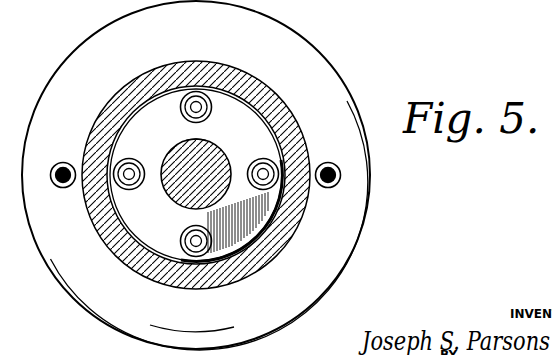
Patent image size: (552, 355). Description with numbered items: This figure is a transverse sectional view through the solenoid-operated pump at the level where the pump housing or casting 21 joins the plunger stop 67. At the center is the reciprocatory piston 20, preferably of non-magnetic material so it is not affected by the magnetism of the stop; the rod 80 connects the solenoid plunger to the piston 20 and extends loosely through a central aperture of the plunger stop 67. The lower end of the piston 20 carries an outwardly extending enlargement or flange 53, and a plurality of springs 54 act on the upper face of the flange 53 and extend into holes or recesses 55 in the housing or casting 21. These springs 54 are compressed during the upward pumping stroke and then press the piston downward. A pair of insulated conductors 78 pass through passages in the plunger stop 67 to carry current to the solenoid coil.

The plunger stop 67 is at (308, 69).
The housing or casting 21 is at (213, 64).
The flange 53 is at (128, 127).
The piston 20 is at (169, 157).
The rod 80 is at (207, 139).
The springs 54 is at (263, 157).
The holes or recesses 55 is at (182, 237).
The insulated conductors 78 is at (63, 186).